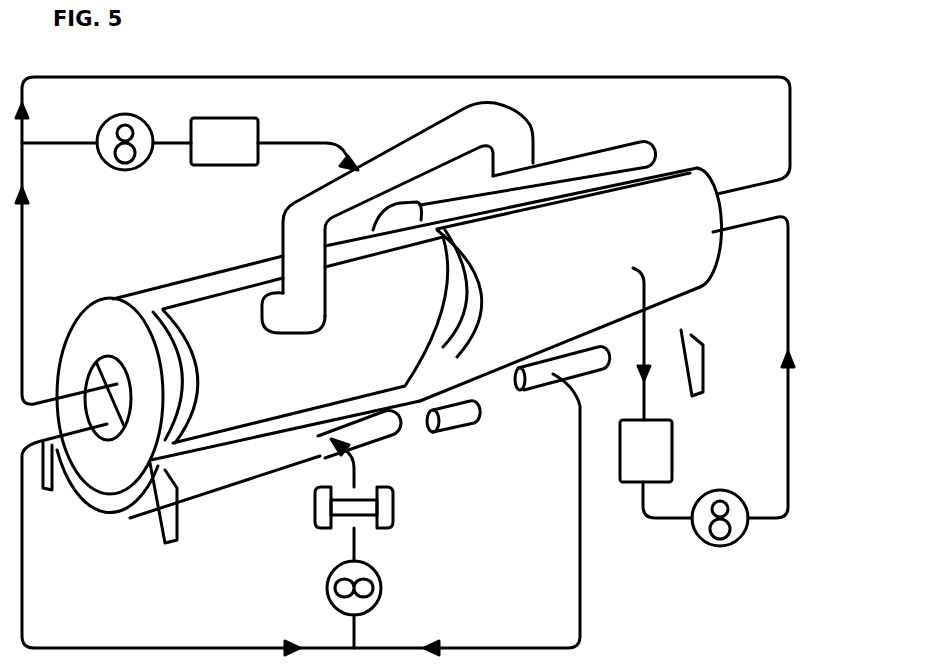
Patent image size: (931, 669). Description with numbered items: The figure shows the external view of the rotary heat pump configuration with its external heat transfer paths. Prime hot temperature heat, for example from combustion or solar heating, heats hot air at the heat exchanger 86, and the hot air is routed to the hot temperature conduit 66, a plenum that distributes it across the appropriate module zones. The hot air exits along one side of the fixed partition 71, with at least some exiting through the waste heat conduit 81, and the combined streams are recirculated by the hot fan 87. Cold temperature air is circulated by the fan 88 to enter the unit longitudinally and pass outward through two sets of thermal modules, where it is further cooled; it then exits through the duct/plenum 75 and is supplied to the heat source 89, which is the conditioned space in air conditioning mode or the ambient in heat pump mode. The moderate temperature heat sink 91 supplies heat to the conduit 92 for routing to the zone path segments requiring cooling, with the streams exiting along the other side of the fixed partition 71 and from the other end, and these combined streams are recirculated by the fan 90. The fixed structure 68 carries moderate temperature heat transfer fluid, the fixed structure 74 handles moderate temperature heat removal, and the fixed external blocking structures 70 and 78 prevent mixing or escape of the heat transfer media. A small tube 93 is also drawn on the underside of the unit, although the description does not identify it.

The hot temperature conduit 66 is at (202, 493).
The fixed structure for moderate temperature heat transfer fluid 68 is at (238, 266).
The fixed external blocking structure 70 is at (182, 277).
The fixed partition 71 is at (103, 360).
The fixed structure for moderate temperature heat removal 74 is at (581, 158).
The duct/plenum 75 is at (713, 167).
The fixed external blocking structure 78 is at (628, 362).
The waste heat conduit 81 is at (533, 396).
The heat exchanger 86 is at (393, 510).
The hot fan 87 is at (381, 584).
The fan 88 is at (725, 546).
The heat source 89 is at (672, 453).
The fan 90 is at (114, 171).
The moderate temperature heat sink 91 is at (215, 166).
The conduit 92 is at (410, 138).
The drain tube 93 is at (432, 435).